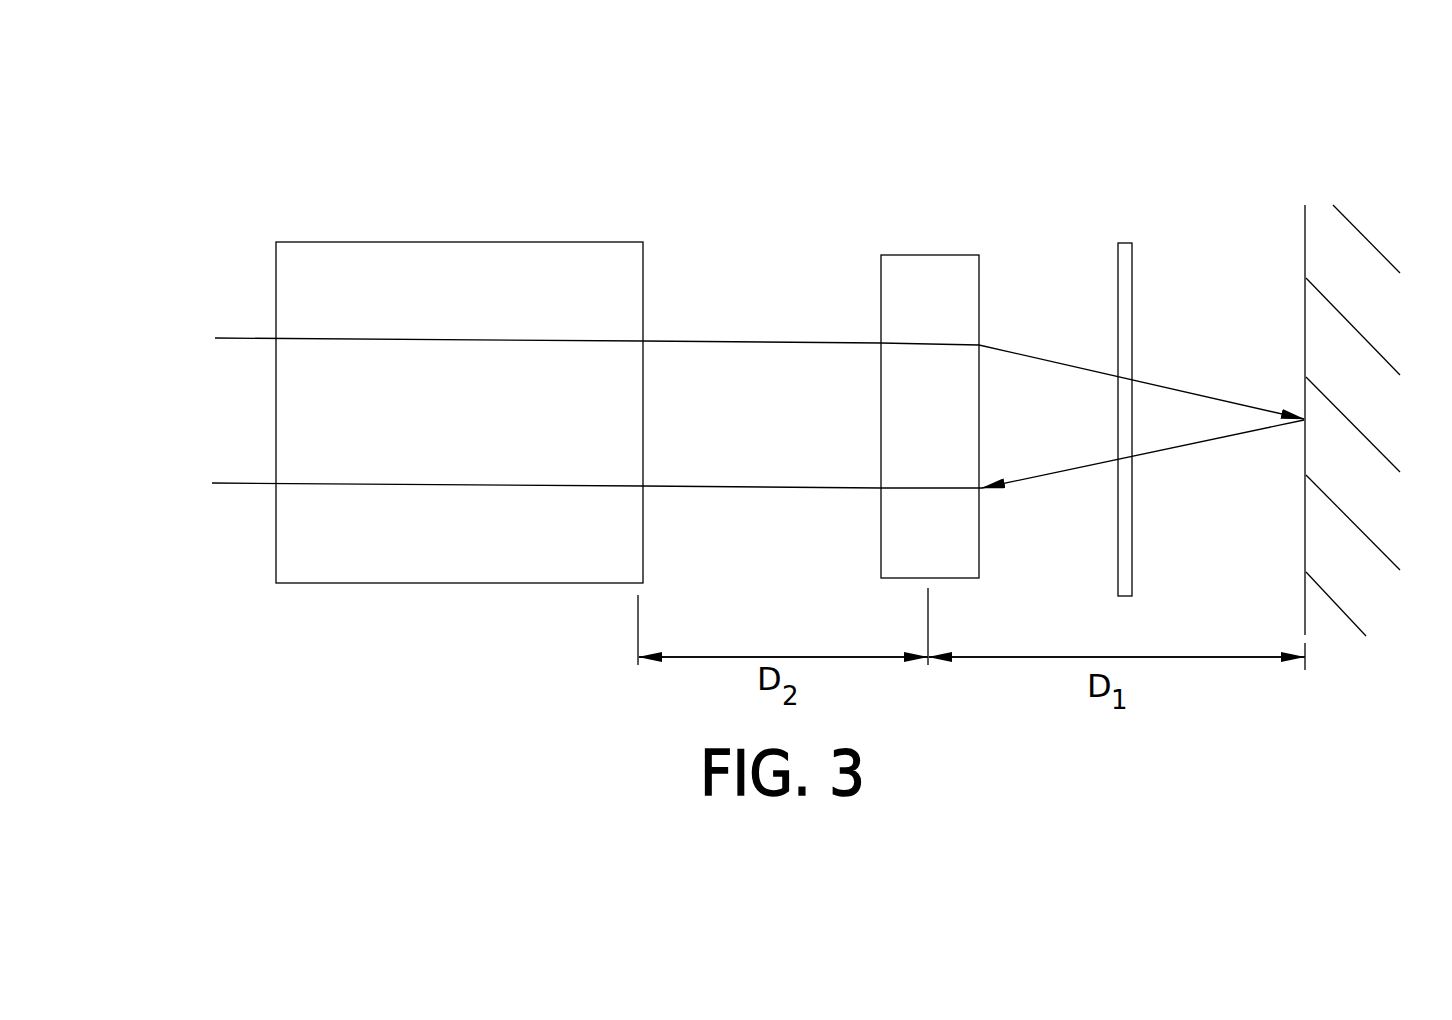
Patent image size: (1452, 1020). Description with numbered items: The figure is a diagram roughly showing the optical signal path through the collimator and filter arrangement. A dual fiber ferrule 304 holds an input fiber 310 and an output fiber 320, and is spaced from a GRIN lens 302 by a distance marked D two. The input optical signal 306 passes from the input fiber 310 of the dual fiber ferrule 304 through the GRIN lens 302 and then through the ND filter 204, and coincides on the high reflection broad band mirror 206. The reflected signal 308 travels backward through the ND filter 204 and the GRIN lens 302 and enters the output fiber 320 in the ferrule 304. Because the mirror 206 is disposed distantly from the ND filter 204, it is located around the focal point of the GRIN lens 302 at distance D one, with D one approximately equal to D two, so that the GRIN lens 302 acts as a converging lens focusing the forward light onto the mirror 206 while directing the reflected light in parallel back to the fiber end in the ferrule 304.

The ND filter 204 is at (1145, 244).
The high reflection broad band mirror 206 is at (1437, 233).
The GRIN lens 302 is at (921, 252).
The dual fiber ferrule 304 is at (505, 238).
The input optical signal 306 is at (696, 336).
The reflected signal 308 is at (711, 492).
The input fiber 310 is at (236, 337).
The output fiber 320 is at (250, 485).